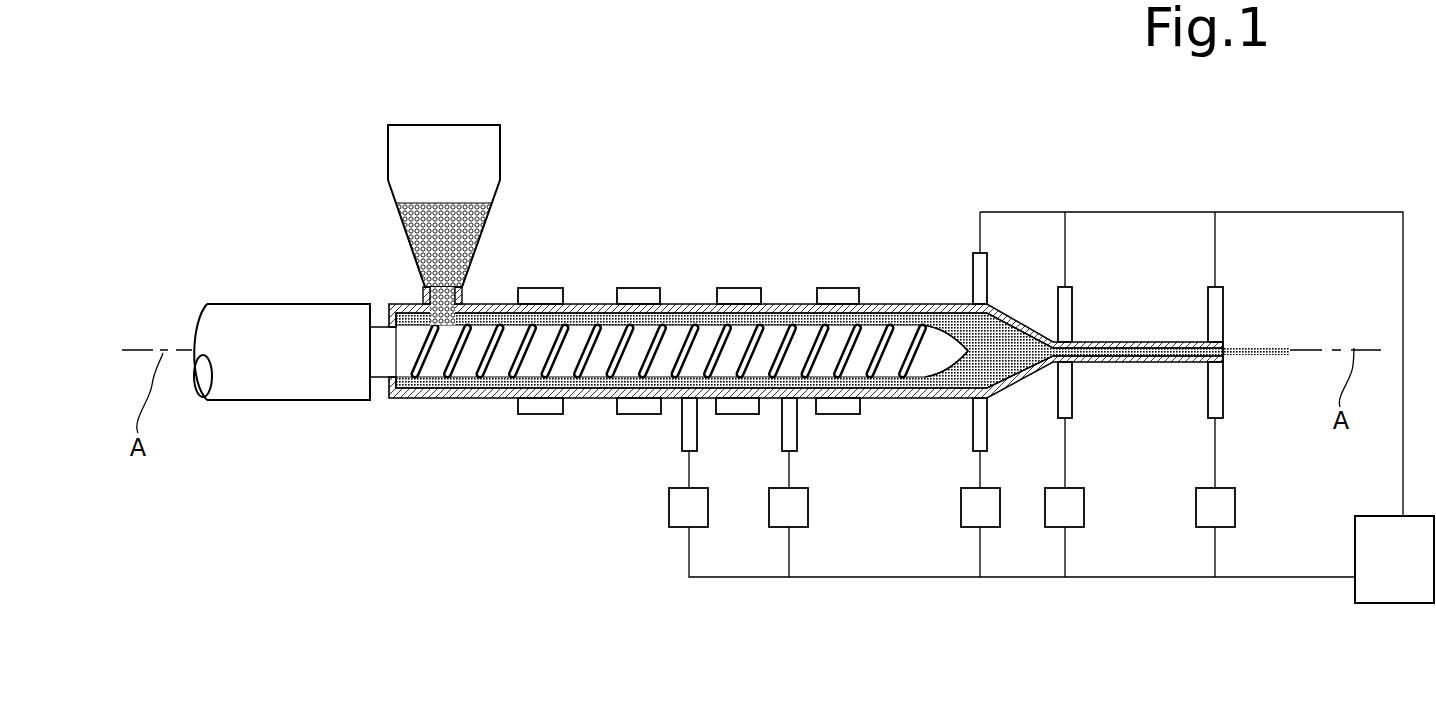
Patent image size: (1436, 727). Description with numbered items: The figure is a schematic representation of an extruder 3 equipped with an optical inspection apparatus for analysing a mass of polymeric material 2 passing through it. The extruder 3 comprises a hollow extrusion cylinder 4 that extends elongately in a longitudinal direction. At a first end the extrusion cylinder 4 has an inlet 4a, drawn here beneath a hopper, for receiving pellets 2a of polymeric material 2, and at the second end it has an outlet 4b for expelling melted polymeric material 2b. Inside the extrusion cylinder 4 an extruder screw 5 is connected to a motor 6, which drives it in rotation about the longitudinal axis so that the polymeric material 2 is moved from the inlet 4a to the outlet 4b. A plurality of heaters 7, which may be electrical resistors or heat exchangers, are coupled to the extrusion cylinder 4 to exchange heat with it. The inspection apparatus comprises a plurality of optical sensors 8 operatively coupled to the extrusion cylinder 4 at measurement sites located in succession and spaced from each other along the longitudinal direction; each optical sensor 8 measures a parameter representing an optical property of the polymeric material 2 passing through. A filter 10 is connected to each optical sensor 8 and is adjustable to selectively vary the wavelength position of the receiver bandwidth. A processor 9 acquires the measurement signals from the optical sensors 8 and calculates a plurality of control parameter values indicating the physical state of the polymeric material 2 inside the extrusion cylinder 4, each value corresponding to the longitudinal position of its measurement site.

The polymeric material 2 is at (810, 317).
The pellets 2a is at (415, 225).
The melted polymeric material 2b is at (1154, 350).
The extruder 3 is at (413, 415).
The extrusion cylinder 4 is at (467, 393).
The inlet 4a is at (465, 288).
The outlet 4b is at (1228, 342).
The extruder screw 5 is at (938, 348).
The motor 6 is at (255, 333).
The heaters 7 is at (550, 297).
The optical sensors 8 is at (980, 276).
The processor 9 is at (1389, 578).
The filter 10 is at (1227, 521).